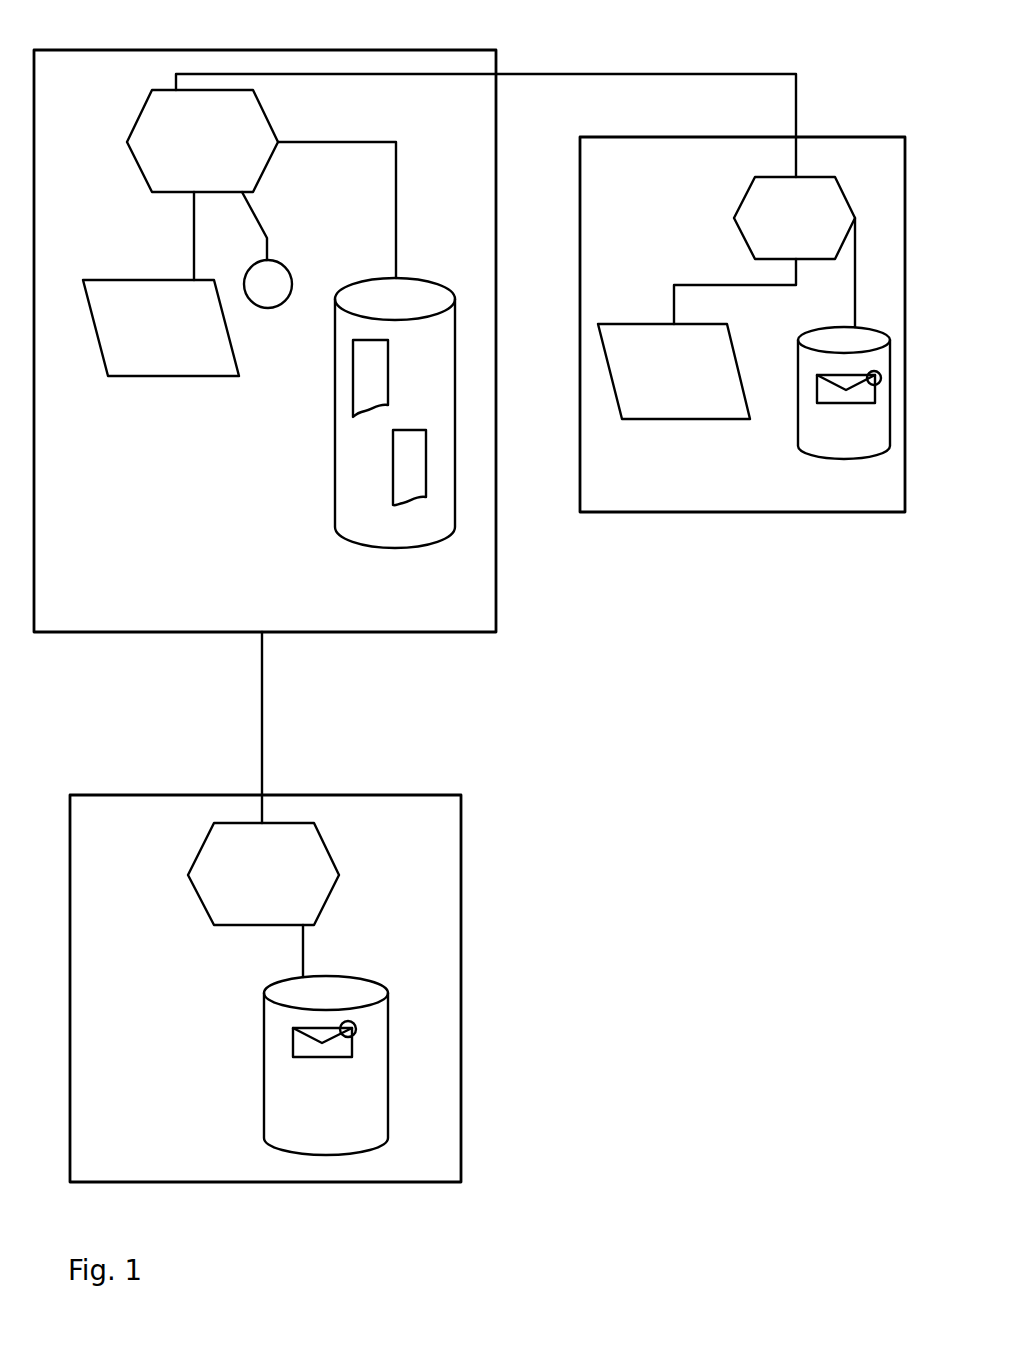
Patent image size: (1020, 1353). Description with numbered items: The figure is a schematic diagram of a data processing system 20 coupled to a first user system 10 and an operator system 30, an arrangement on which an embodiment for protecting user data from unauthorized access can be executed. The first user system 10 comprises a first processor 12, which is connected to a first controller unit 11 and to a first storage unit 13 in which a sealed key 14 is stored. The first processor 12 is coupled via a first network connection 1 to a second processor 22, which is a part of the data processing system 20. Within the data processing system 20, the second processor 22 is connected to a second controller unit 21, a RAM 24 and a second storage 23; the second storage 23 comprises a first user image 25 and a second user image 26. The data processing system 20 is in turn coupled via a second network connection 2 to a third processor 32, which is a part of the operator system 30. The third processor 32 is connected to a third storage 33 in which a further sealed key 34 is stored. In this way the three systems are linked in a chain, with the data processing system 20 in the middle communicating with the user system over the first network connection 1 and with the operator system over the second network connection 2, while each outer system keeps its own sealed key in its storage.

The first network connection 1 is at (565, 72).
The second network connection 2 is at (263, 690).
The first user system 10 is at (607, 495).
The first controller unit 11 is at (700, 413).
The first processor 12 is at (754, 193).
The first storage unit 13 is at (842, 437).
The sealed key 14 is at (820, 387).
The data processing system 20 is at (468, 620).
The second controller unit 21 is at (142, 367).
The second processor 22 is at (148, 118).
The second storage 23 is at (415, 533).
The RAM 24 is at (277, 277).
The first user image 25 is at (363, 387).
The second user image 26 is at (402, 471).
The operator system 30 is at (437, 852).
The third processor 32 is at (313, 850).
The third storage 33 is at (375, 1097).
The sealed key 34 is at (347, 1045).